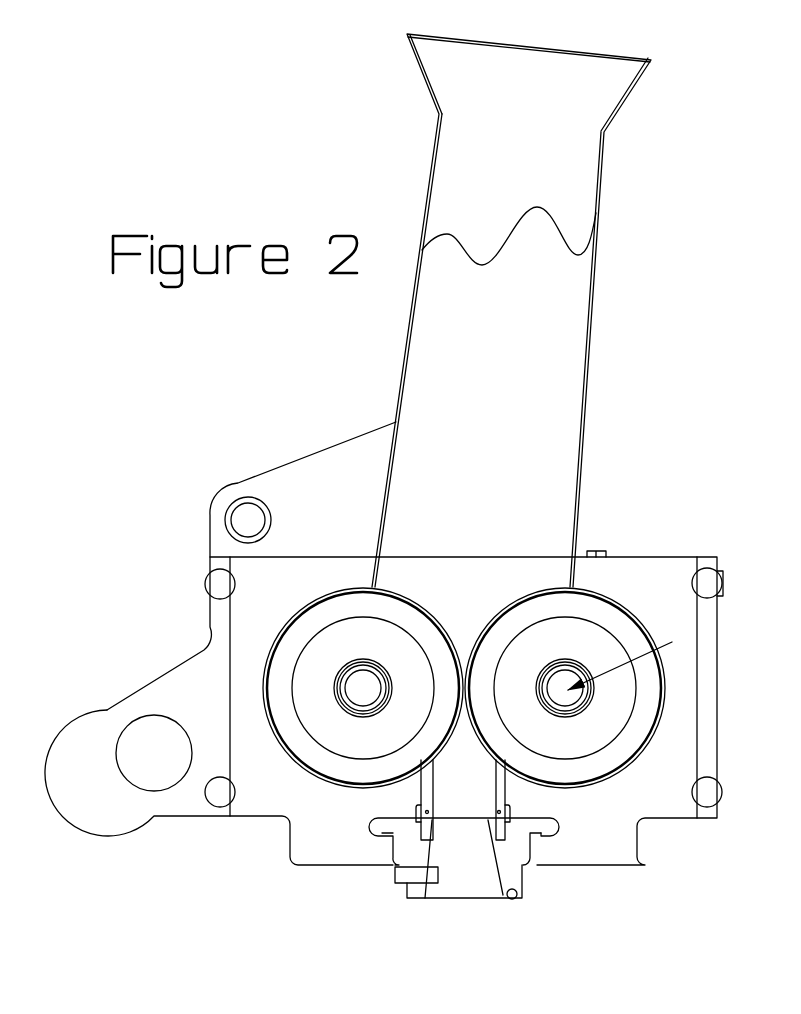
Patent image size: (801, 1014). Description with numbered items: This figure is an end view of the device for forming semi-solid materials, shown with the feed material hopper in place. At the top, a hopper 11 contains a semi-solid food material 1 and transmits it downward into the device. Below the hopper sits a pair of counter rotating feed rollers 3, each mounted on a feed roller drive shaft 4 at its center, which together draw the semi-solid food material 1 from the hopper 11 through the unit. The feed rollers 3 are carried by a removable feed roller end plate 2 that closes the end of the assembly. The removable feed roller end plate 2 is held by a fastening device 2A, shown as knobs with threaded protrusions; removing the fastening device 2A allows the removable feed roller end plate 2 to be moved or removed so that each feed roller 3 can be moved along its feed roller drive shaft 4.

The semi-solid food material 1 is at (612, 133).
The hopper 11 is at (550, 310).
The removable feed roller end plate 2 is at (325, 830).
The fastening device 2A is at (213, 795).
The feed roller 3 is at (297, 638).
The feed roller drive shaft 4 is at (357, 687).